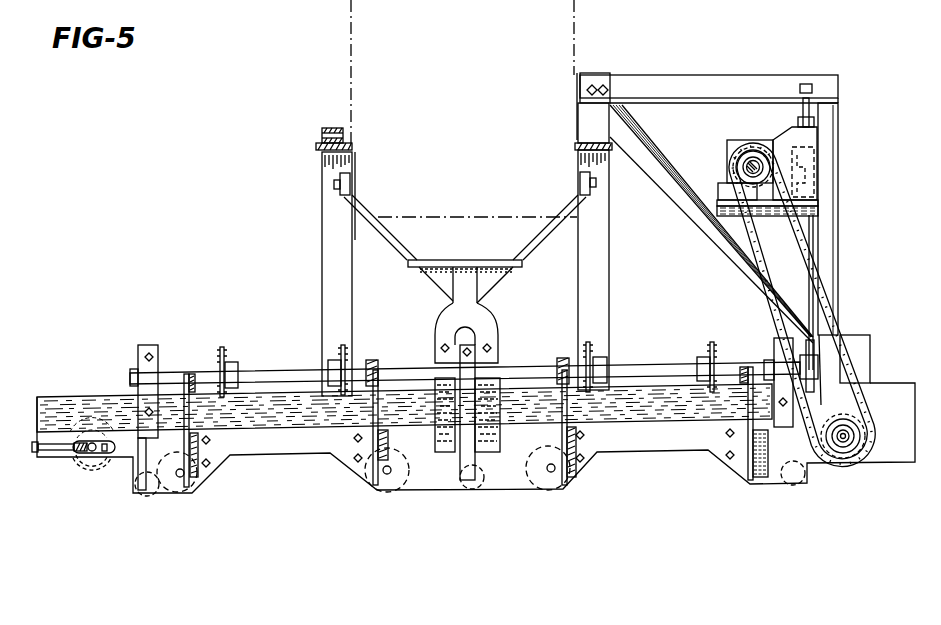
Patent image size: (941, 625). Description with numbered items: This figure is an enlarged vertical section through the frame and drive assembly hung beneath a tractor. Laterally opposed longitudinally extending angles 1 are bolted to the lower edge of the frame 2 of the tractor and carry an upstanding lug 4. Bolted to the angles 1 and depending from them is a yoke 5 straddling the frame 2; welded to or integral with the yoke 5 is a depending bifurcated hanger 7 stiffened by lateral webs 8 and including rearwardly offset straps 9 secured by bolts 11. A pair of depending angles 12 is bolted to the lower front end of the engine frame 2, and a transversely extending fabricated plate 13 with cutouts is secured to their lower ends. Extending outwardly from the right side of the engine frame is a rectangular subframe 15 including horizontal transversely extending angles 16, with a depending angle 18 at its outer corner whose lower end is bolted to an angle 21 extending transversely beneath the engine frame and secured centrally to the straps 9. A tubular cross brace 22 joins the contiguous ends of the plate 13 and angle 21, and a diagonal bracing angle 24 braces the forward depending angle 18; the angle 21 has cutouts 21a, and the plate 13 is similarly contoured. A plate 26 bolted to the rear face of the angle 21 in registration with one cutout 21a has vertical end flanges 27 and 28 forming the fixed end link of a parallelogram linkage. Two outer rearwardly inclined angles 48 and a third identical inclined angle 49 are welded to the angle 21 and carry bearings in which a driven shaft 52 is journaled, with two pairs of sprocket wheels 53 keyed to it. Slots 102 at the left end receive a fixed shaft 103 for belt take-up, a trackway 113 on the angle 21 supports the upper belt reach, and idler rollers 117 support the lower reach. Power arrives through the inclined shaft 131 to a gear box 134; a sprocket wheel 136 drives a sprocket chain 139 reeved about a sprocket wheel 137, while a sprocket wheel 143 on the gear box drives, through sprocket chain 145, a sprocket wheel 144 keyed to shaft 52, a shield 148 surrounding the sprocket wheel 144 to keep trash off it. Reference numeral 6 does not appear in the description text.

The angles 1 is at (333, 150).
The frame 2 is at (352, 62).
The upstanding lug 4 is at (334, 128).
The yoke 5 is at (548, 228).
The hopper level line 6 is at (466, 216).
The bifurcated hanger 7 is at (507, 328).
The lateral webs 8 is at (431, 285).
The straps 9 is at (435, 411).
The bolts 11 is at (440, 351).
The depending angles 12 is at (322, 272).
The fabricated plate 13 is at (95, 396).
The subframe 15 is at (830, 65).
The angles 16 is at (716, 81).
The depending angle 18 is at (836, 228).
The angle 21 is at (59, 458).
The cutouts 21a is at (330, 463).
The tubular cross brace 22 is at (158, 490).
The diagonal bracing angle 24 is at (681, 206).
The plate 26 is at (234, 460).
The vertical end flange 27 is at (192, 416).
The vertical end flange 28 is at (373, 412).
The rearwardly inclined angles 48 is at (160, 348).
The rearwardly inclined angle 49 is at (480, 419).
The driven shaft 52 is at (299, 369).
The sprocket wheels 53 is at (196, 350).
The slot 102 is at (104, 454).
The fixed shaft 103 is at (89, 453).
The trackway 113 is at (669, 426).
The idler rollers 117 is at (183, 492).
The shaft 131 is at (748, 168).
The gear box 134 is at (771, 140).
The sprocket wheel 136 is at (746, 158).
The sprocket wheel 137 is at (848, 461).
The sprocket chain 139 is at (833, 302).
The sprocket wheel 143 is at (823, 163).
The sprocket wheel 144 is at (812, 355).
The sprocket chain 145 is at (812, 250).
The shield 148 is at (868, 356).